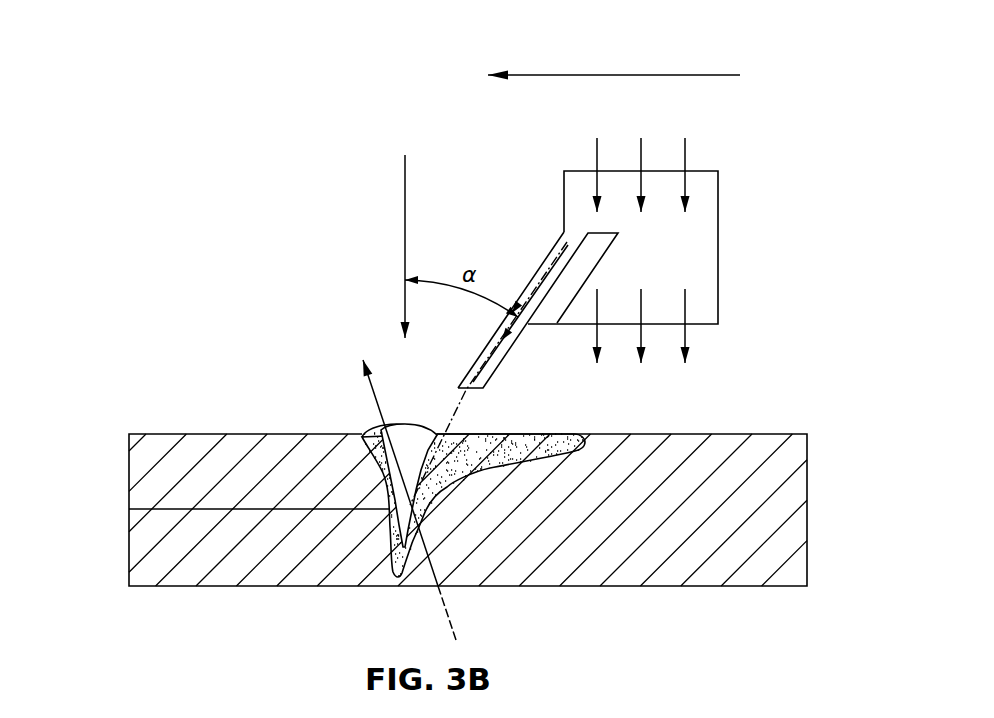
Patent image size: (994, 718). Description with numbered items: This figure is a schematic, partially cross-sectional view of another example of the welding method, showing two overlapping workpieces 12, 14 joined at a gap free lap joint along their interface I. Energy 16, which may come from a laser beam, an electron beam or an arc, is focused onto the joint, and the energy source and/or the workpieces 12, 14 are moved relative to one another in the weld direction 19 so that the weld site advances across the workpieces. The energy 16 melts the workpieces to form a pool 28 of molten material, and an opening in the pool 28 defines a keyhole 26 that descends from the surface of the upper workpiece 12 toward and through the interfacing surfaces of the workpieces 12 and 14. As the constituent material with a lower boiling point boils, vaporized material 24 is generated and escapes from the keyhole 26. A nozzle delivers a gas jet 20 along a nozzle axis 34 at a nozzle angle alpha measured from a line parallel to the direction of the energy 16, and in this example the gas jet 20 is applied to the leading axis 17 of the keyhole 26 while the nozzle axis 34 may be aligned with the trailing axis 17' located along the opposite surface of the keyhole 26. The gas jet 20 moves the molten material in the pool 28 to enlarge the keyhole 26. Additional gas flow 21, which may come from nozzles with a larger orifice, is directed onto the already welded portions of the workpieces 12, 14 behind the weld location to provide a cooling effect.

The workpiece 12 is at (140, 453).
The workpiece 14 is at (160, 560).
The interface I is at (112, 509).
The energy 16 is at (404, 268).
The leading axis of the keyhole 17 is at (497, 613).
The trailing axis of the keyhole 17' is at (488, 373).
The weld direction 19 is at (613, 74).
The gas jet 20 is at (520, 298).
The nozzle axis 34 is at (541, 283).
The gas flow 21 is at (685, 152).
The vaporized material 24 is at (375, 400).
The keyhole 26 is at (410, 443).
The pool 28 is at (513, 447).